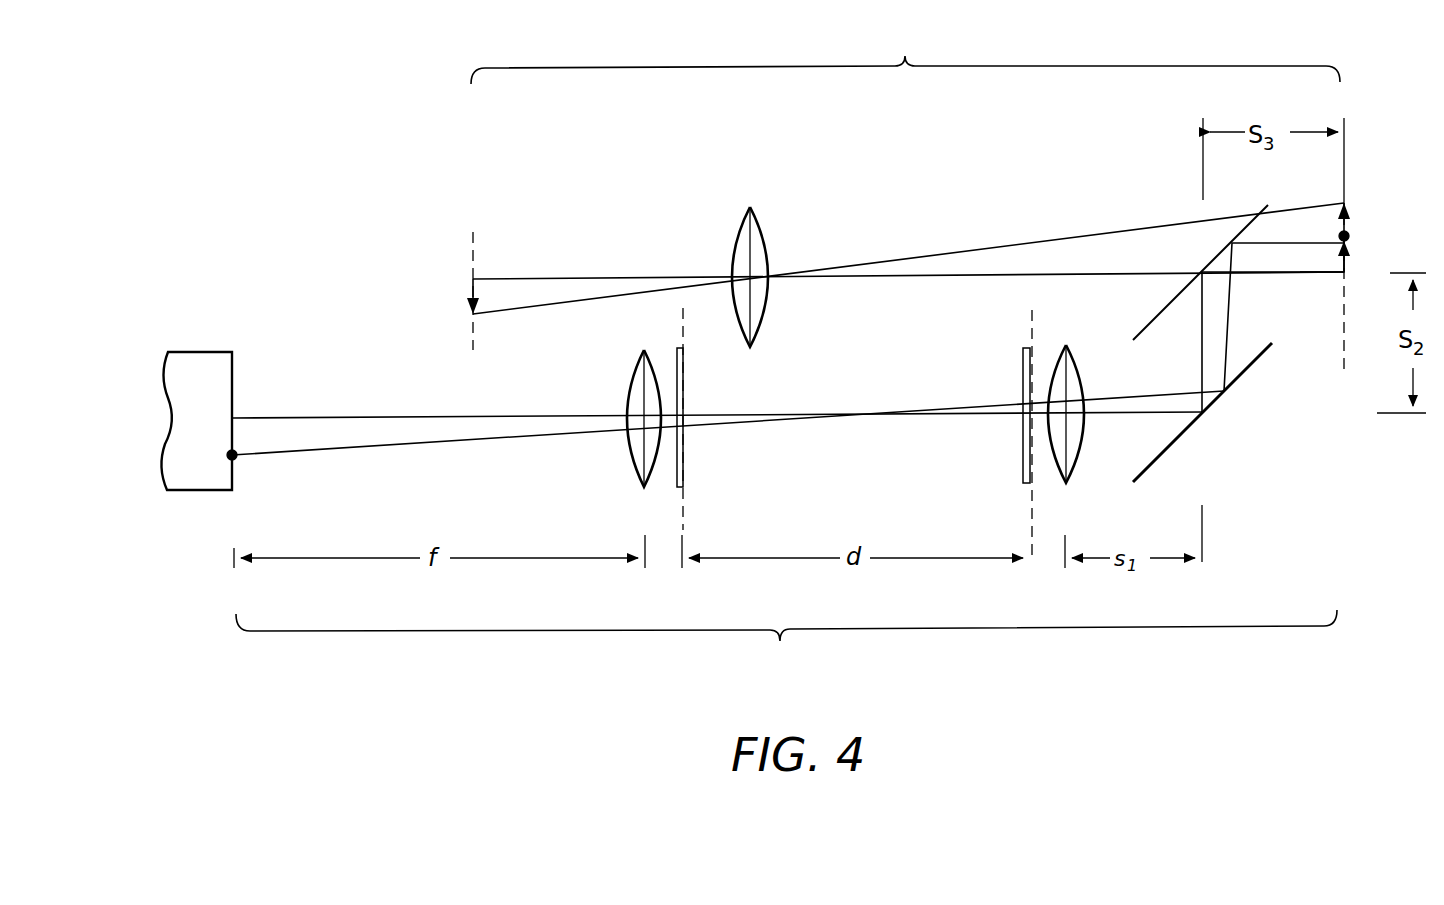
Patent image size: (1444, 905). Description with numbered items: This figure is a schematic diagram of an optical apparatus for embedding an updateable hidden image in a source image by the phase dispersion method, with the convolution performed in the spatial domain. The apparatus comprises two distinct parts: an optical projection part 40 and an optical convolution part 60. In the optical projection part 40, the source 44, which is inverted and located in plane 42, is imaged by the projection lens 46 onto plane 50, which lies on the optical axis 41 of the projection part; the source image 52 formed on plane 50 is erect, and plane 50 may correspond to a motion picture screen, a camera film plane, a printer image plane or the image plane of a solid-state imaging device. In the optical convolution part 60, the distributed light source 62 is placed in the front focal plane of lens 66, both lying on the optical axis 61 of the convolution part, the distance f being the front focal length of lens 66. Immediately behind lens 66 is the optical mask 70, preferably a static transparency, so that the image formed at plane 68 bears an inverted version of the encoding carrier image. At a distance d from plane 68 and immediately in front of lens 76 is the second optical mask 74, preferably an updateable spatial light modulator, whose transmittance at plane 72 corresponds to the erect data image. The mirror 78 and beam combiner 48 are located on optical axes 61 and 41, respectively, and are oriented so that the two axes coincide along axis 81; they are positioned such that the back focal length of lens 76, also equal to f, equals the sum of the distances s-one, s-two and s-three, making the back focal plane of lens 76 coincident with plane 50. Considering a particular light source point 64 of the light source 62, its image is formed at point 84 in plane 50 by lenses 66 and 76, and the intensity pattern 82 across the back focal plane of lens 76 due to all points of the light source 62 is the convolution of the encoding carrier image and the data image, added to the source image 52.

The optical projection part 40 is at (905, 56).
The optical axis 41 is at (588, 277).
The plane 42 is at (470, 250).
The source 44 is at (470, 300).
The projection lens 46 is at (742, 218).
The beam combiner 48 is at (1211, 263).
The plane 50 is at (1343, 355).
The source image 52 is at (1340, 218).
The optical convolution part 60 is at (786, 644).
The optical axis 61 is at (410, 416).
The distributed light source 62 is at (201, 351).
The light source point 64 is at (238, 460).
The lens 66 is at (628, 451).
The plane 68 is at (686, 504).
The optical mask 70 is at (677, 478).
The plane 72 is at (1030, 512).
The second optical mask 74 is at (1022, 461).
The lens 76 is at (1070, 478).
The mirror 78 is at (1170, 450).
The axis 81 is at (1316, 276).
The intensity pattern 82 is at (1350, 262).
The point 84 is at (1350, 234).